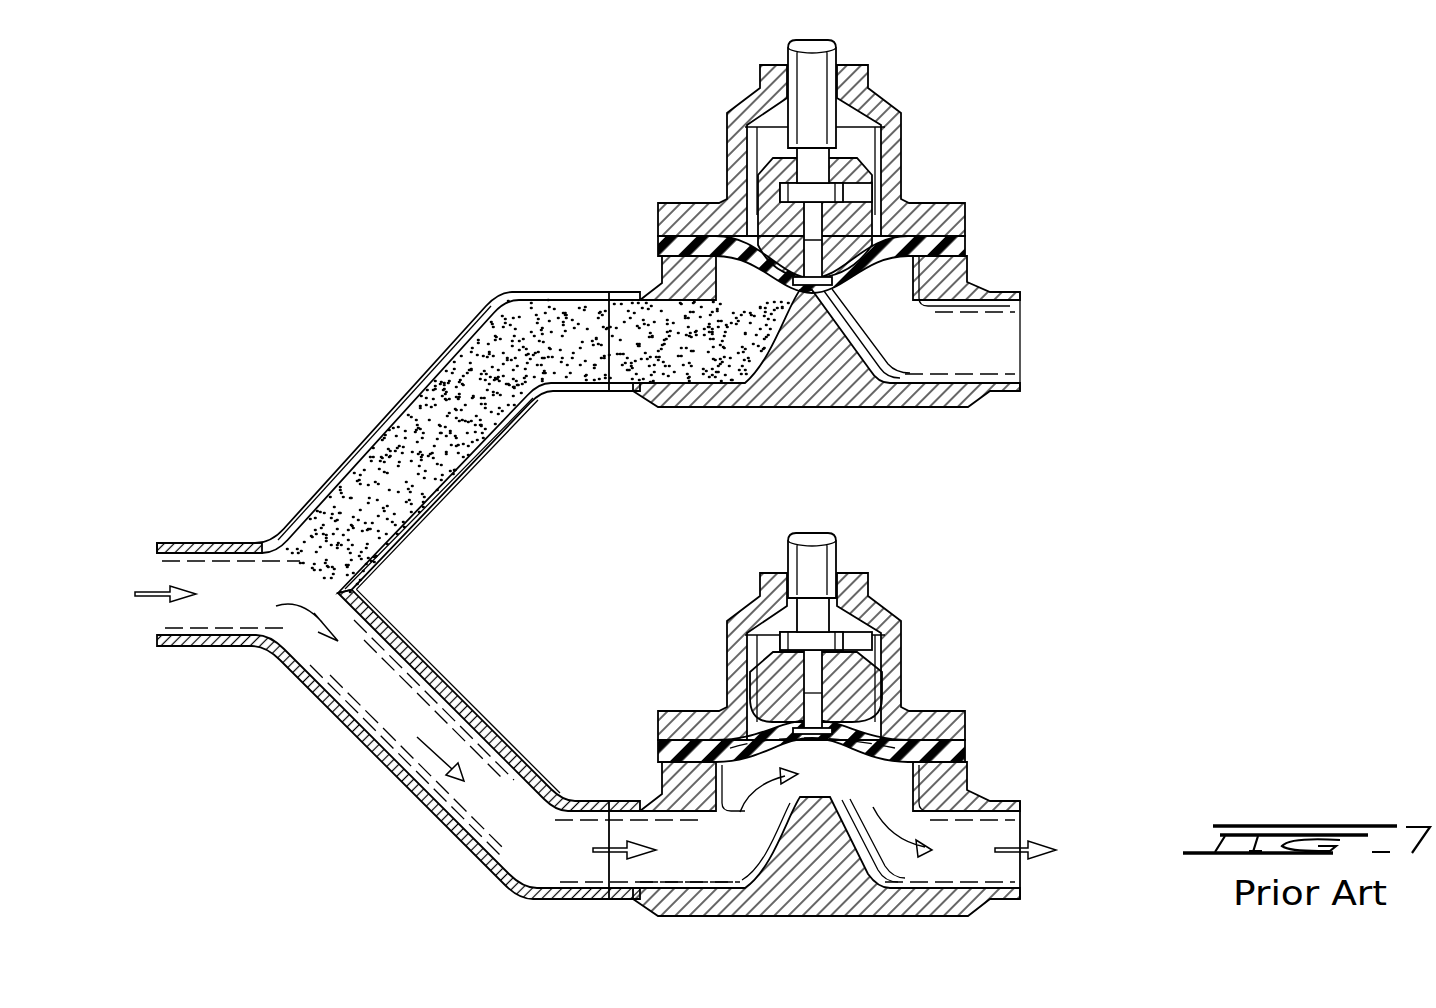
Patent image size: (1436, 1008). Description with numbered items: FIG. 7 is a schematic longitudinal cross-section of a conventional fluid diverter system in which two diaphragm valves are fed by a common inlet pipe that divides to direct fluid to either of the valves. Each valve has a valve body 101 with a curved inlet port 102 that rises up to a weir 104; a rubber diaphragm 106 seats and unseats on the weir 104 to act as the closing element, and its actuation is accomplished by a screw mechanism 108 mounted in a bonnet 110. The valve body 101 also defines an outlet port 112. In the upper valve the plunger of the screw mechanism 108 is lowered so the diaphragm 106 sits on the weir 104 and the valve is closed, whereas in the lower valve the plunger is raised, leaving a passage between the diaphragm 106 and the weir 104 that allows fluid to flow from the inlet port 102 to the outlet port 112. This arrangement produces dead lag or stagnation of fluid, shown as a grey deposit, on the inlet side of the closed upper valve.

The valve body 101 is at (991, 790).
The inlet port 102 is at (606, 872).
The weir 104 is at (832, 794).
The diaphragm 106 is at (969, 751).
The screw mechanism 108 is at (838, 566).
The bonnet 110 is at (897, 612).
The outlet port 112 is at (1024, 830).